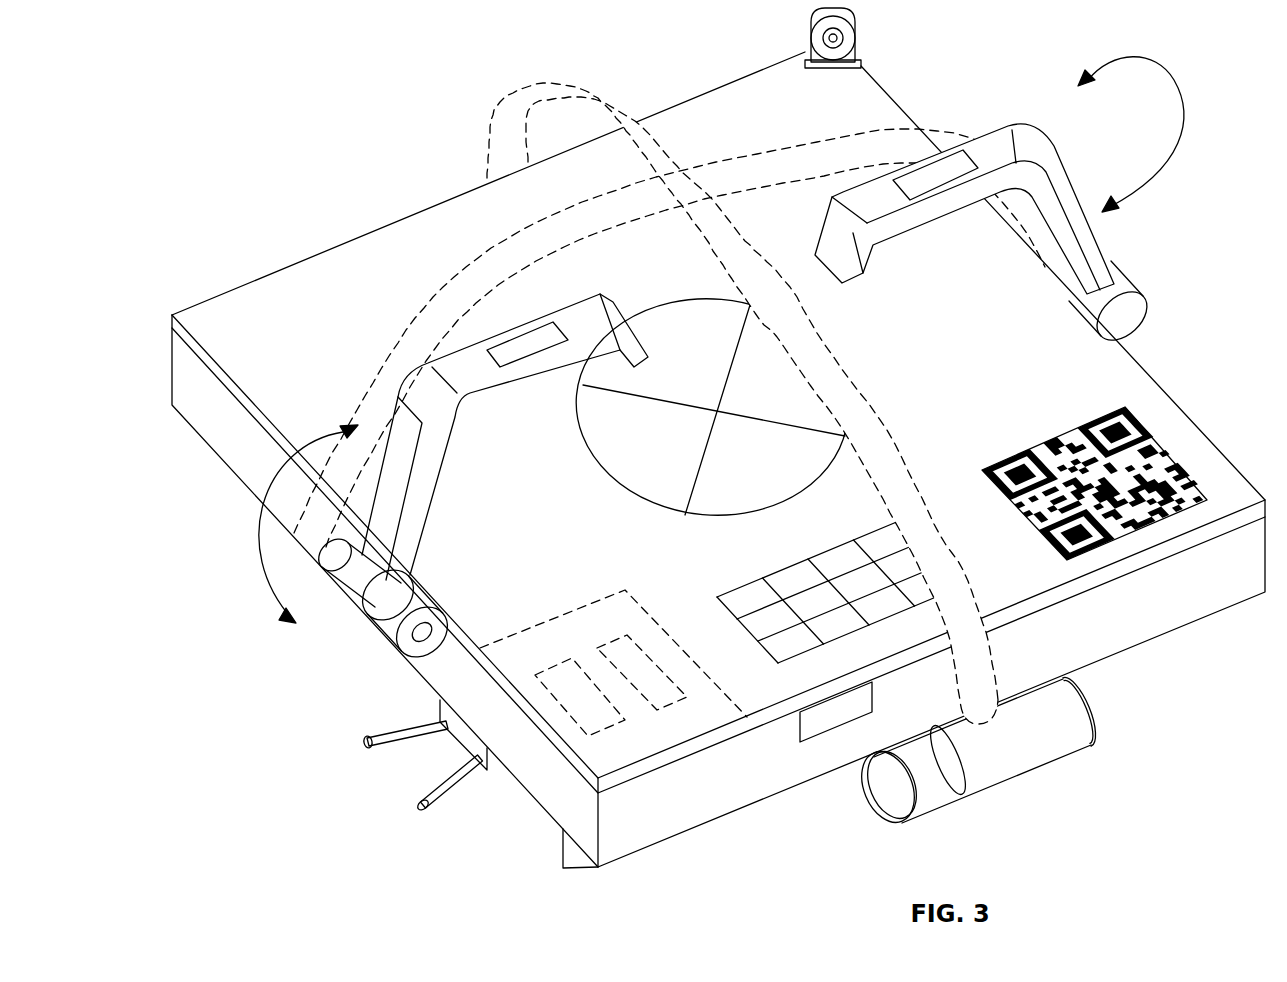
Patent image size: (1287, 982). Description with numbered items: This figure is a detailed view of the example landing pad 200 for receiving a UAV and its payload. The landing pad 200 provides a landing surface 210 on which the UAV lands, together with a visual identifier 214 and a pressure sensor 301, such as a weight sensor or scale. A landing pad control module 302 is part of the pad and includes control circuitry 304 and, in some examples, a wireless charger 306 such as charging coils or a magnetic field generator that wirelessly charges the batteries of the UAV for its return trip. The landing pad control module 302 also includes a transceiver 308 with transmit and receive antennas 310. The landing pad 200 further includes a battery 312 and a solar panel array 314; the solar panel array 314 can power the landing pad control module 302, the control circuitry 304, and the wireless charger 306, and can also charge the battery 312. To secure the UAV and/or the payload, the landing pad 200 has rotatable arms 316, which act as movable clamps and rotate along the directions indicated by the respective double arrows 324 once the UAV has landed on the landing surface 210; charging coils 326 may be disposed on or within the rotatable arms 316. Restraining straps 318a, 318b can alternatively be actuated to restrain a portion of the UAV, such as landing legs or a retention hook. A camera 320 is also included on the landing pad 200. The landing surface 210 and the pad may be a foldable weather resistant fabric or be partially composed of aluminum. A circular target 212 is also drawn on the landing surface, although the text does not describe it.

The landing pad 200 is at (288, 66).
The landing surface 210 is at (945, 378).
The circular target 212 is at (722, 300).
The visual identifier 214 is at (1140, 465).
The pressure sensor 301 is at (830, 735).
The landing pad control module 302 is at (578, 892).
The control circuitry 304 is at (563, 660).
The wireless charger 306 is at (608, 632).
The transceiver 308 is at (488, 780).
The antennas 310 is at (372, 752).
The battery 312 is at (1040, 748).
The solar panel array 314 is at (790, 565).
The rotatable arms 316 is at (992, 125).
The restraining strap 318a is at (428, 308).
The restraining strap 318b is at (662, 150).
The camera 320 is at (808, 40).
The double arrows 324 is at (1142, 58).
The charging coils 326 is at (521, 338).